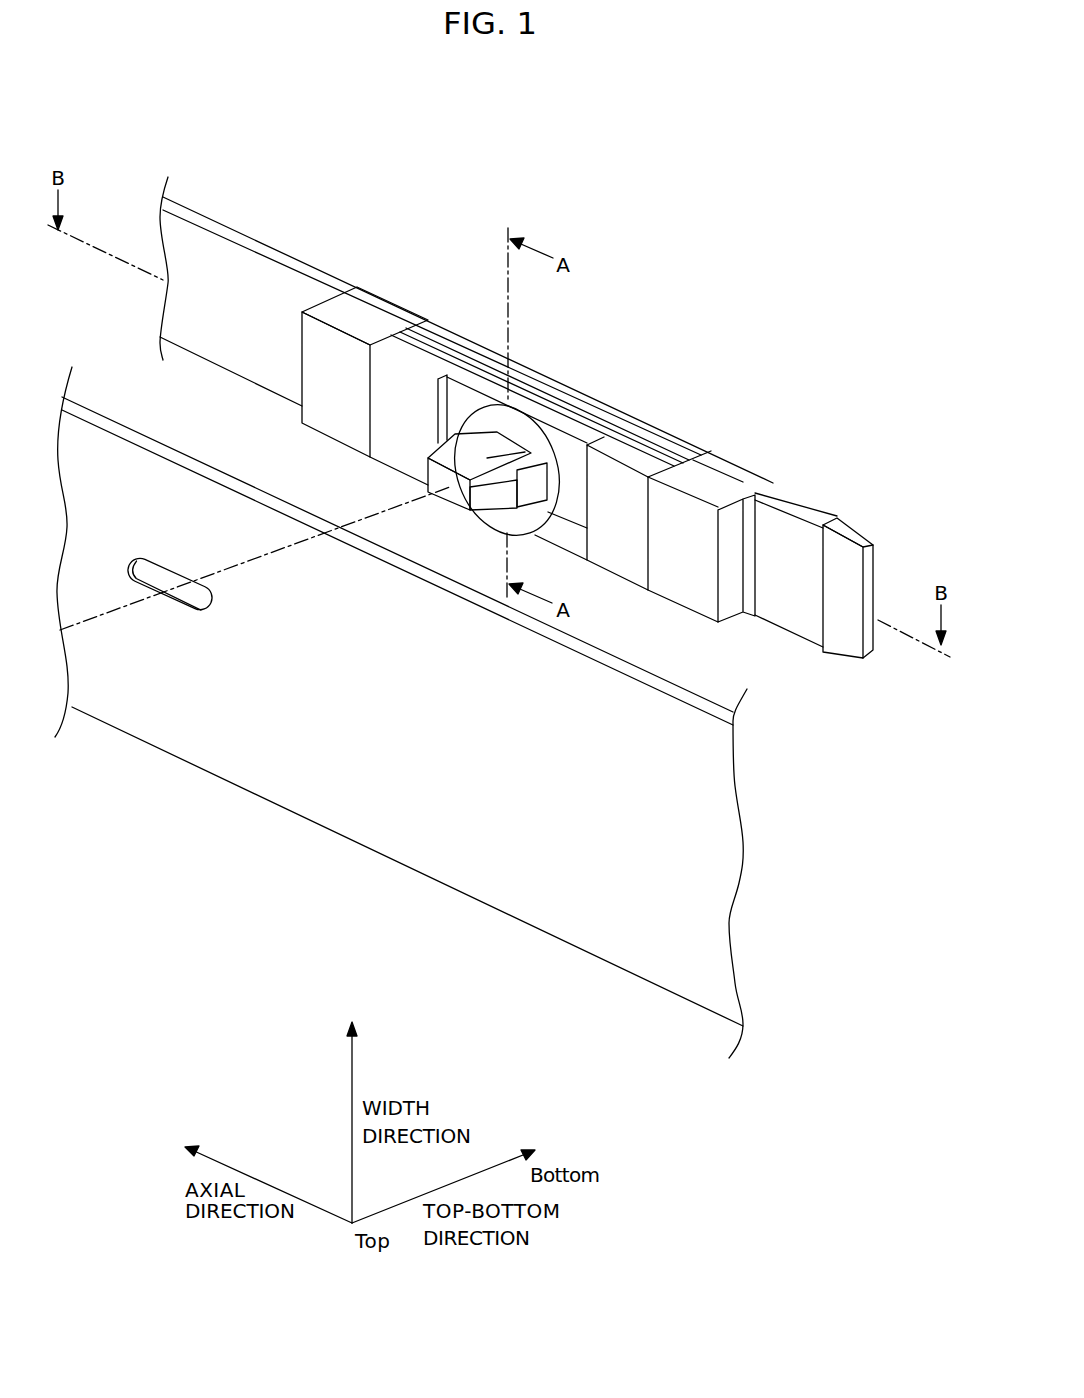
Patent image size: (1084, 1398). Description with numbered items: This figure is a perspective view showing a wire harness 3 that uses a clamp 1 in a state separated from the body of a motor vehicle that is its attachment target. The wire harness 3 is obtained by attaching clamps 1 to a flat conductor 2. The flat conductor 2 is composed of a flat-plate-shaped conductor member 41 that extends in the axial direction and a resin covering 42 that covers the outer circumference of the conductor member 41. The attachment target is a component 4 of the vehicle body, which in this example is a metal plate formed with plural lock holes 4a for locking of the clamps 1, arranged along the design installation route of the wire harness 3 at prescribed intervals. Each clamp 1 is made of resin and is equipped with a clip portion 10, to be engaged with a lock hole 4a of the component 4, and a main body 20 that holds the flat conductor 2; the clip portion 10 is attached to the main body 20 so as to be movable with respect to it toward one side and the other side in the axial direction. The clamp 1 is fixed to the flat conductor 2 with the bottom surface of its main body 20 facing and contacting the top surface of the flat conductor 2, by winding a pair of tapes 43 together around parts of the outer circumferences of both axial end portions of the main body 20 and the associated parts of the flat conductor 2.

The clamp 1 is at (708, 245).
The clip portion 10 is at (490, 443).
The main body 20 is at (540, 405).
The flat conductor 2 is at (810, 299).
The wire harness 3 is at (650, 168).
The component 4 is at (401, 712).
The lock hole 4a is at (178, 608).
The conductor member 41 is at (851, 526).
The resin covering 42 is at (800, 505).
The tape 43 is at (393, 303).